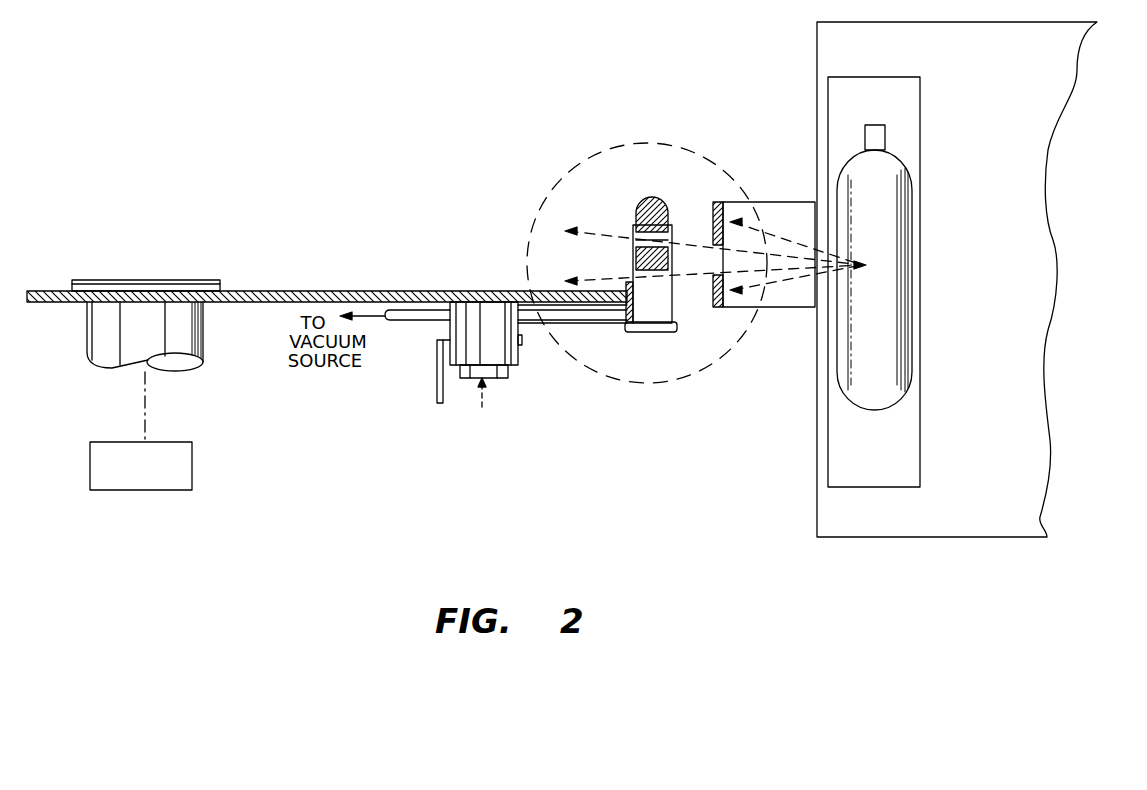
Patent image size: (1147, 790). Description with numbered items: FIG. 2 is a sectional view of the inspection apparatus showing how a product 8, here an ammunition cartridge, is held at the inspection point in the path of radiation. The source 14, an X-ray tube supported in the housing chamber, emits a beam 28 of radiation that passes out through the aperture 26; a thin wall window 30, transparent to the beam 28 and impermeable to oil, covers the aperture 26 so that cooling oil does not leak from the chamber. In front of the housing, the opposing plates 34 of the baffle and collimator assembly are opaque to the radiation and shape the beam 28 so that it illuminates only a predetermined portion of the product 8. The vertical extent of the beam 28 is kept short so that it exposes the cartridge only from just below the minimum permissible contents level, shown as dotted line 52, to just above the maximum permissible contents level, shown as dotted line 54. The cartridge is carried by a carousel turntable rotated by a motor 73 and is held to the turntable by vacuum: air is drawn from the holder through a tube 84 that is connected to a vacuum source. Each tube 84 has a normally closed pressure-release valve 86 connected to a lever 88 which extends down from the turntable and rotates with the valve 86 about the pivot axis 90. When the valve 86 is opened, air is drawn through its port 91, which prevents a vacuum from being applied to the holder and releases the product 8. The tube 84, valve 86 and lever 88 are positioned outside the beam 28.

The product 8 is at (657, 305).
The source of electromagnetic radiation 14 is at (885, 248).
The aperture 26 is at (823, 283).
The beam of radiation 28 is at (605, 226).
The thin wall window 30 is at (835, 233).
The plates 34 is at (787, 215).
The dotted line 52 is at (862, 266).
The dotted line 54 is at (862, 263).
The motor 73 is at (141, 431).
The tube 84 is at (543, 323).
The pressure-release valve 86 is at (498, 378).
The lever 88 is at (437, 393).
The pivot axis 90 is at (522, 345).
The port 91 is at (470, 380).